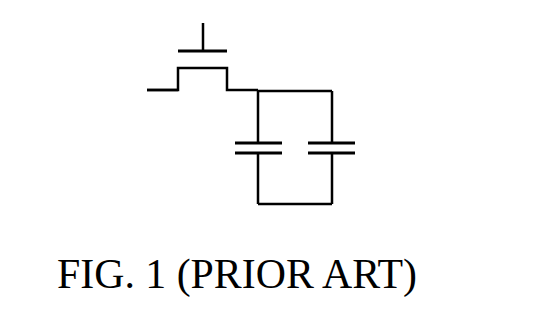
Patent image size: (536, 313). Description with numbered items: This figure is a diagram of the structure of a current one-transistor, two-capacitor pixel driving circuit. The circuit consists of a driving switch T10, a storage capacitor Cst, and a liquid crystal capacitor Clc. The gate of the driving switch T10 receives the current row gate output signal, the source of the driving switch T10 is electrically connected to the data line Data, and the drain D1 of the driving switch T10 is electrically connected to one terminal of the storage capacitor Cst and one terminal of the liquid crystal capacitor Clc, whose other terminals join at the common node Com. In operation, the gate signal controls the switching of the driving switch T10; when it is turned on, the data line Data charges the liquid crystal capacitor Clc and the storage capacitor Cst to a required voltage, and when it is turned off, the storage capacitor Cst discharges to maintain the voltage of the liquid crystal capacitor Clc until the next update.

The driving switch T10 is at (202, 83).
The data line Data is at (128, 89).
The drain of the driving switch D1 is at (288, 80).
The storage capacitor Cst is at (233, 147).
The liquid crystal capacitor Clc is at (360, 147).
The common terminal Com is at (295, 220).